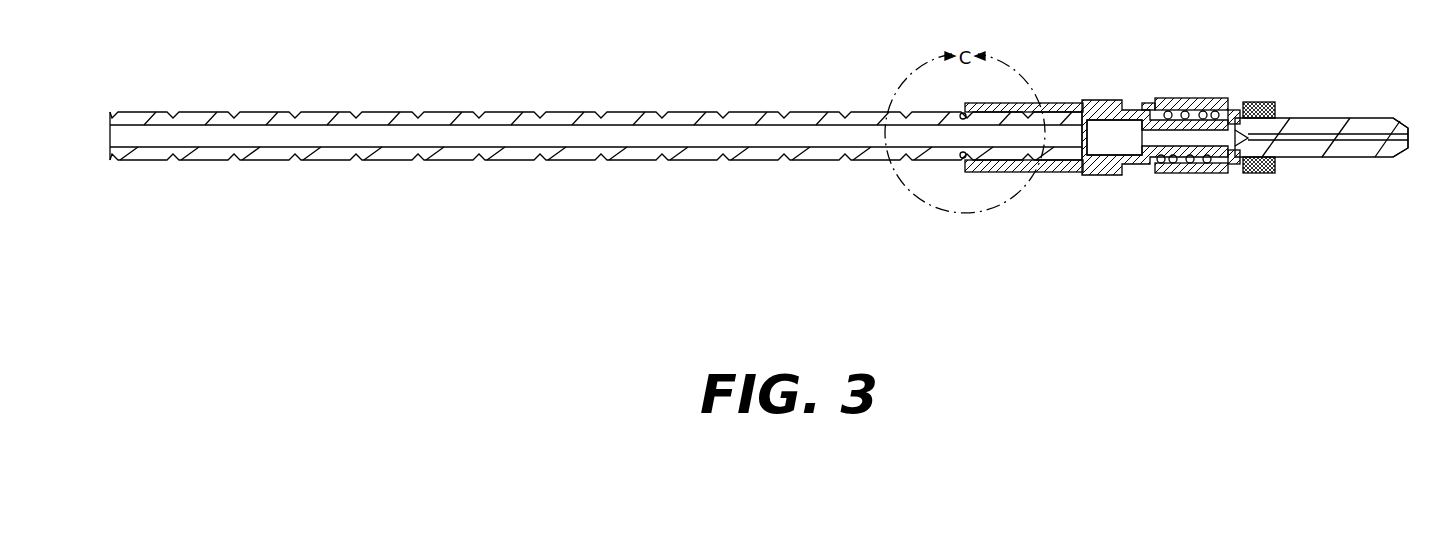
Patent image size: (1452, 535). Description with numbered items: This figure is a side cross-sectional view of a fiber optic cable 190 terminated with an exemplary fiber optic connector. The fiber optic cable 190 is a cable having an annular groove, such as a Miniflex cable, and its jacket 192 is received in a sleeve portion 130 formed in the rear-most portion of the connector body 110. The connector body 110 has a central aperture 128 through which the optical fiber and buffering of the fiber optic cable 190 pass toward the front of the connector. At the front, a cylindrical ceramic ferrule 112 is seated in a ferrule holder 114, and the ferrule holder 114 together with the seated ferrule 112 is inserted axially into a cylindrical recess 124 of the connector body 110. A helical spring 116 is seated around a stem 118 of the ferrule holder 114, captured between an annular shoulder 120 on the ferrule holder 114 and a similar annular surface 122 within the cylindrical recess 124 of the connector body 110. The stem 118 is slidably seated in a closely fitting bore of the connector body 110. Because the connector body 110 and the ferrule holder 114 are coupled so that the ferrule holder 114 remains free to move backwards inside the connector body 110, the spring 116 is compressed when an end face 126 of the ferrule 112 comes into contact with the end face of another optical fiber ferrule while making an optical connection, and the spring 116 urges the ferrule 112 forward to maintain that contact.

The fiber optic cable 190 is at (425, 112).
The jacket 192 is at (992, 165).
The sleeve portion 130 is at (1055, 102).
The connector body 110 is at (1108, 100).
The central aperture 128 is at (1108, 147).
The annular surface 122 is at (1150, 103).
The cylindrical recess 124 is at (1193, 98).
The spring 116 is at (1195, 167).
The stem 118 is at (1155, 163).
The annular shoulder 120 is at (1232, 164).
The ferrule holder 114 is at (1232, 102).
The ferrule 112 is at (1345, 118).
The end face 126 is at (1408, 148).